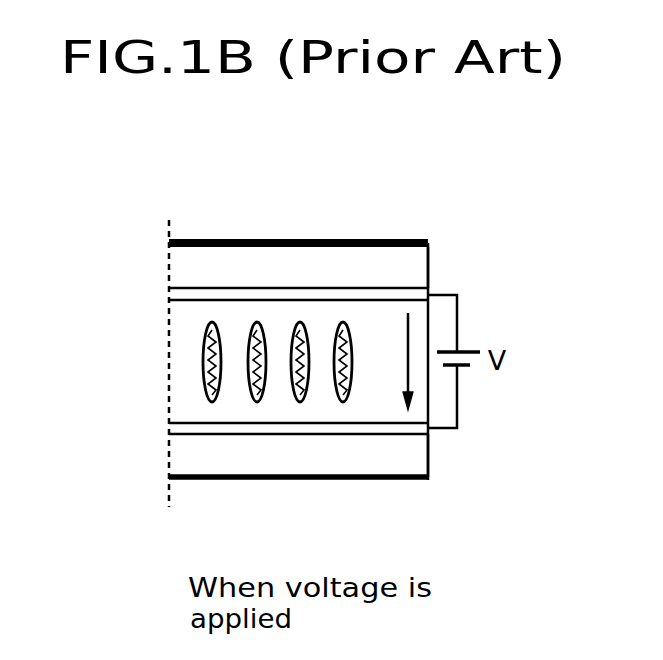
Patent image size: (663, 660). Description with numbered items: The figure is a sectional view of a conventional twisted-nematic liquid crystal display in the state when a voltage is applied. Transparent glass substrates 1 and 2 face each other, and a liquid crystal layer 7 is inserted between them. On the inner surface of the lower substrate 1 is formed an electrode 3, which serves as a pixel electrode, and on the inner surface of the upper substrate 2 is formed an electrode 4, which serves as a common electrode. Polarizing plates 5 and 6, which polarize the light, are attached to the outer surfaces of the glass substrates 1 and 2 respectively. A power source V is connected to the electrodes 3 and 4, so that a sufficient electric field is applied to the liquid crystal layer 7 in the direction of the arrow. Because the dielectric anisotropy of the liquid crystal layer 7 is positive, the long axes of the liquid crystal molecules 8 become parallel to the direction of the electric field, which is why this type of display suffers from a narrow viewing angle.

The lower glass substrate 1 is at (420, 450).
The upper glass substrate 2 is at (413, 259).
The pixel electrode 3 is at (360, 430).
The common electrode 4 is at (353, 289).
The polarizing plate 5 is at (400, 480).
The polarizing plate 6 is at (278, 240).
The liquid crystal layer 7 is at (308, 364).
The liquid crystal molecules 8 is at (212, 322).